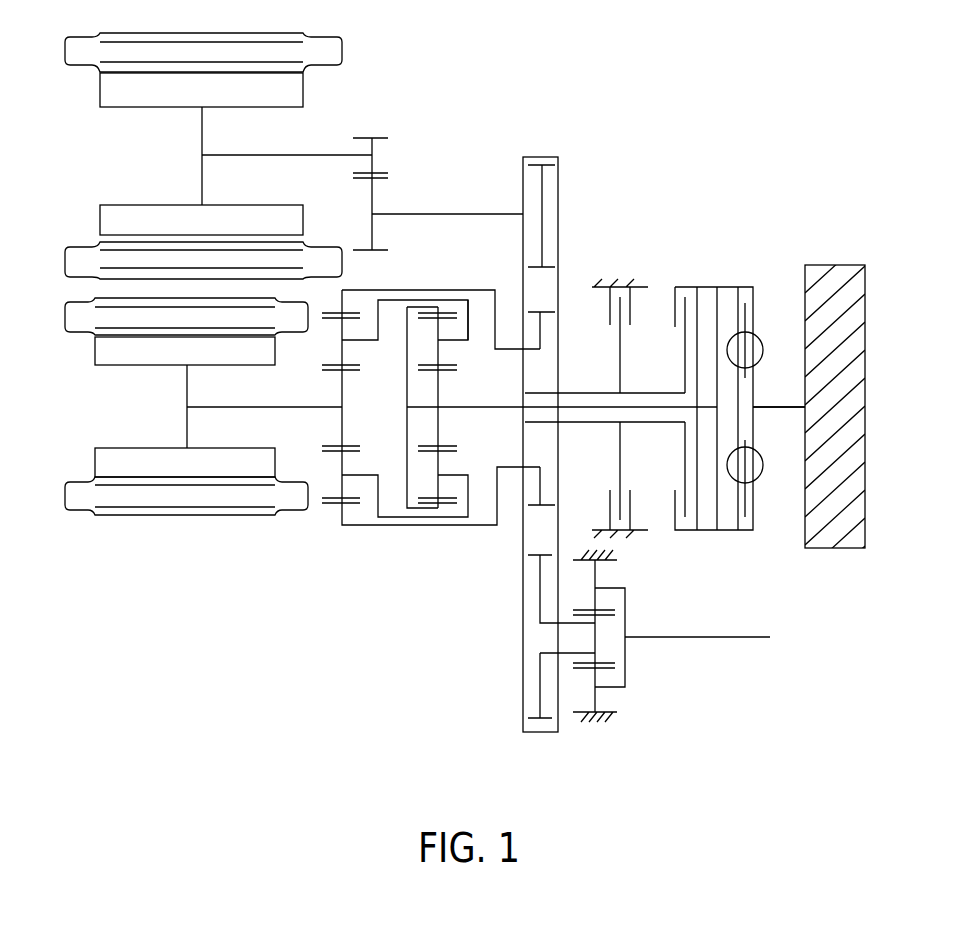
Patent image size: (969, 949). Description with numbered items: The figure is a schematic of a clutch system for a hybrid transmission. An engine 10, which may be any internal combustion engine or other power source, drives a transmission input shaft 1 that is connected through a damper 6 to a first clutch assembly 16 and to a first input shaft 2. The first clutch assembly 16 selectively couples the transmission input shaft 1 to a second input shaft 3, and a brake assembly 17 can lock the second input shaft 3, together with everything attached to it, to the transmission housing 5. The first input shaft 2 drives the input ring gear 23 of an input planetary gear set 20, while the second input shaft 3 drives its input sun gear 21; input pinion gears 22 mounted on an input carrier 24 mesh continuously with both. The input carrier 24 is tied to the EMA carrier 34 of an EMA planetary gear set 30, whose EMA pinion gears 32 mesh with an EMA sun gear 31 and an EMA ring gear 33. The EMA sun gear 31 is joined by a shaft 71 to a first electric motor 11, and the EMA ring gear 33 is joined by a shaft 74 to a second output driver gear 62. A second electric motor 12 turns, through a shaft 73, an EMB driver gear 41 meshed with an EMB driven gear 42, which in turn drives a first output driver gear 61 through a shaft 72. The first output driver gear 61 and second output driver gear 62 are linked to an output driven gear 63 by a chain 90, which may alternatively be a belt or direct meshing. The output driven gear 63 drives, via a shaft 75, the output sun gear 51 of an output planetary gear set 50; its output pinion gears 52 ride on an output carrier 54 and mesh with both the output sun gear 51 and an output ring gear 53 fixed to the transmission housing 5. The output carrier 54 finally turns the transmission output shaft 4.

The transmission input shaft 1 is at (775, 407).
The first input shaft 2 is at (645, 412).
The second input shaft 3 is at (582, 393).
The output shaft 4 is at (735, 637).
The transmission housing 5 is at (620, 264).
The damper 6 is at (767, 492).
The engine 10 is at (830, 265).
The first electric motor 11 is at (95, 462).
The second electric motor 12 is at (100, 91).
The first clutch assembly 16 is at (691, 333).
The brake assembly 17 is at (627, 333).
The input planetary gear set 20 is at (464, 436).
The input sun gear 21 is at (440, 392).
The input pinion gears 22 is at (438, 347).
The input ring gear 23 is at (441, 312).
The input carrier 24 is at (470, 320).
The EMA planetary gear set 30 is at (411, 418).
The EMA sun gear 31 is at (346, 372).
The EMA pinion gears 32 is at (340, 328).
The EMA ring gear 33 is at (331, 312).
The EMA carrier 34 is at (371, 348).
The EMB driver gear 41 is at (366, 135).
The EMB driven gear 42 is at (378, 181).
The output planetary gear set 50 is at (639, 648).
The output sun gear 51 is at (606, 655).
The output pinion gears 52 is at (595, 702).
The output ring gear 53 is at (600, 712).
The output carrier 54 is at (625, 607).
The first output driver gear 61 is at (542, 165).
The second output driver gear 62 is at (540, 505).
The output driven gear 63 is at (540, 555).
The shaft 71 is at (265, 406).
The shaft 72 is at (430, 214).
The shaft 73 is at (316, 155).
The shaft 74 is at (398, 290).
The shaft 75 is at (563, 653).
The chain 90 is at (523, 640).